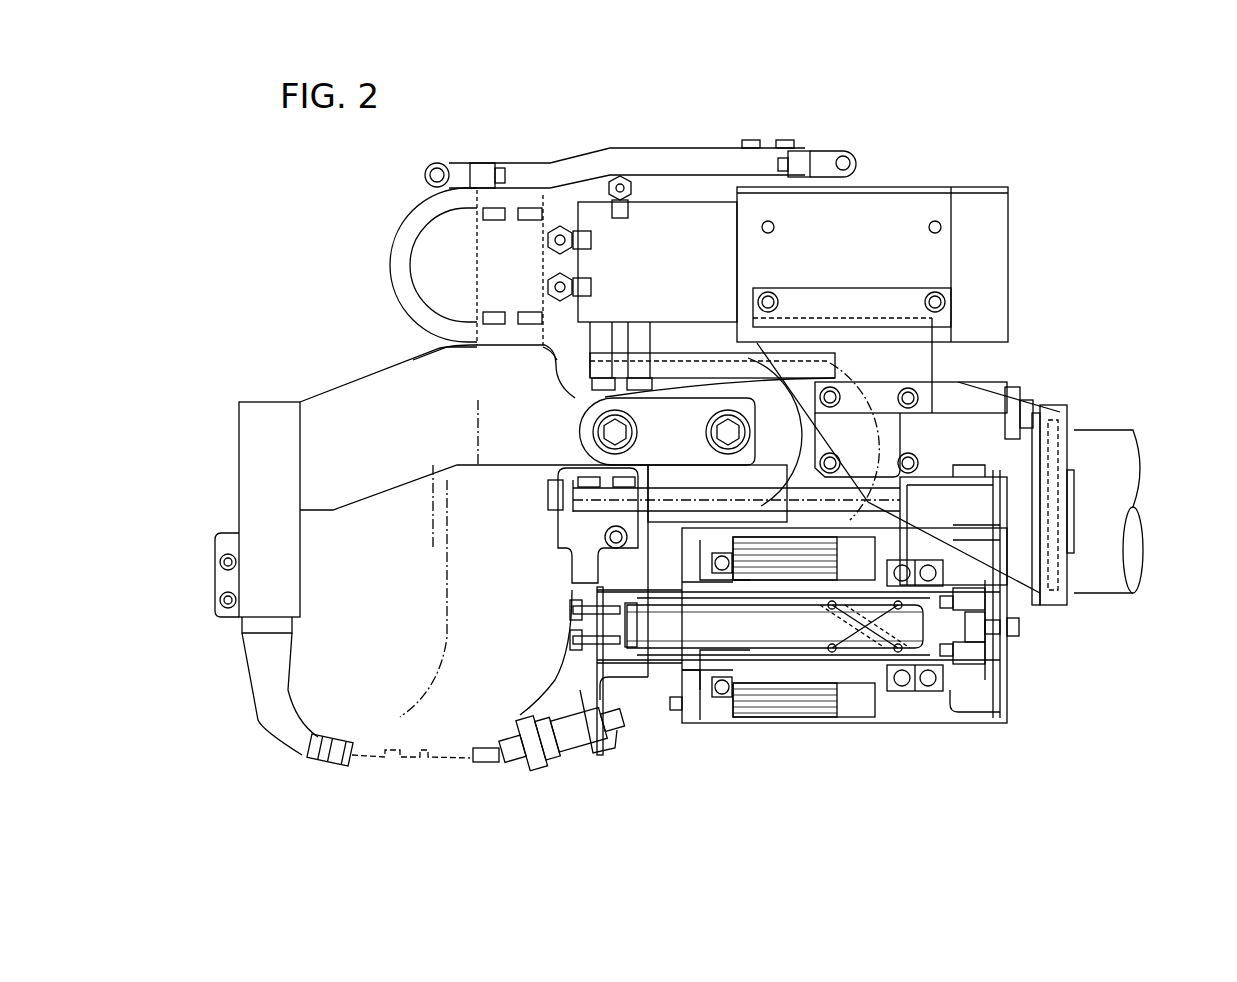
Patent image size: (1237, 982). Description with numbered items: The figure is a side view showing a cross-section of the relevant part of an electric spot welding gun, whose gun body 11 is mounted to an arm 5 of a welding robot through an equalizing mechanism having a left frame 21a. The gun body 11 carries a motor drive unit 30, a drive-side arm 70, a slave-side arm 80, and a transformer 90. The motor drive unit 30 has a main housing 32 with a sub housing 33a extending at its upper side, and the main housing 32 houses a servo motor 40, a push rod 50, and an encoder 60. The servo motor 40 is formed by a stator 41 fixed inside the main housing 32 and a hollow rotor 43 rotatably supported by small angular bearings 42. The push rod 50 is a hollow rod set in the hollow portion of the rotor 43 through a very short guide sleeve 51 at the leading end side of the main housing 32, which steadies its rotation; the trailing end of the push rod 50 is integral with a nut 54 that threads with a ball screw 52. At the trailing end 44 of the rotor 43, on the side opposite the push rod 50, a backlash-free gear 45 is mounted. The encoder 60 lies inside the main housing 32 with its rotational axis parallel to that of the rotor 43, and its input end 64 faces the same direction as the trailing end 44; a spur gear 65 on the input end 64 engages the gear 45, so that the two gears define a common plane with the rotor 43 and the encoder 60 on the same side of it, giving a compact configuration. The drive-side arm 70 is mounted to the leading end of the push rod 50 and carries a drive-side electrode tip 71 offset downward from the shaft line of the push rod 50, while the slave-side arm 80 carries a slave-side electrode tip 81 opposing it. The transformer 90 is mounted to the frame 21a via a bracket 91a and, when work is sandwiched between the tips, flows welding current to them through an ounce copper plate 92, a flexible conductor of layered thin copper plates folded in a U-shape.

The arm 5 is at (1135, 466).
The gun body 11 is at (930, 108).
The frame 21a is at (1032, 410).
The motor drive unit 30 is at (950, 725).
The main housing 32 is at (983, 725).
The sub housing 33a is at (1002, 384).
The servo motor 40 is at (816, 770).
The stator 41 is at (765, 700).
The small angular bearings 42 is at (928, 690).
The hollow rotor 43 is at (797, 700).
The trailing end 44 is at (1002, 640).
The gear 45 is at (1005, 676).
The push rod 50 is at (660, 680).
The guide sleeve 51 is at (722, 697).
The ball screw 52 is at (830, 662).
The nut 54 is at (880, 655).
The encoder 60 is at (982, 495).
The input end 64 is at (1063, 532).
The gear 65 is at (1063, 490).
The drive-side arm 70 is at (566, 675).
The drive-side electrode tip 71 is at (472, 765).
The slave-side arm 80 is at (240, 449).
The slave-side electrode tip 81 is at (356, 760).
The transformer 90 is at (905, 212).
The bracket 91a is at (935, 345).
The ounce copper plate 92 is at (388, 262).